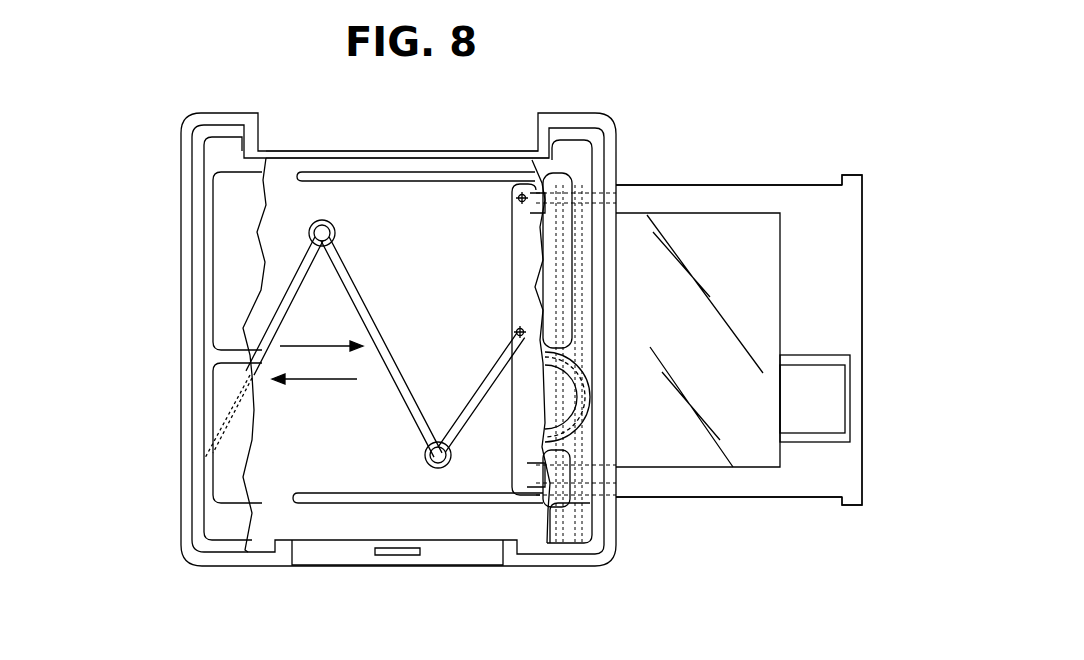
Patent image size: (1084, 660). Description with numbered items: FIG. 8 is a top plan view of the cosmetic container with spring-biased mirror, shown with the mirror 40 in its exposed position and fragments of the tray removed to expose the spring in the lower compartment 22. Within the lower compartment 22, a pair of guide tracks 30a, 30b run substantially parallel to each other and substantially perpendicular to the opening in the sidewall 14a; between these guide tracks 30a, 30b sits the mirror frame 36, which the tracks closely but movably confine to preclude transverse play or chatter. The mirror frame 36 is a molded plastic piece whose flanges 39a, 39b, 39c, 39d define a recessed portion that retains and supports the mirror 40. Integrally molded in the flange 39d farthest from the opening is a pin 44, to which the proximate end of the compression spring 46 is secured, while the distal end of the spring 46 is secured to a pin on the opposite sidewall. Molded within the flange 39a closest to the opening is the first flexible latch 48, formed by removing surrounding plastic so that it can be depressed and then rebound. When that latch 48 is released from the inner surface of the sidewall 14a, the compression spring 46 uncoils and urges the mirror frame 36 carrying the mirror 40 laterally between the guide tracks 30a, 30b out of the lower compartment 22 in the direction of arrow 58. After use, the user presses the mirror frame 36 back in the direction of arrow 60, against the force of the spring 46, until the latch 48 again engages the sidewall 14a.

The sidewall 14a is at (608, 535).
The lower compartment 22 is at (422, 478).
The guide track 30a is at (345, 525).
The guide track 30b is at (458, 180).
The compression spring 46 is at (358, 268).
The arrow 58 is at (321, 337).
The arrow 60 is at (314, 370).
The flange 39d is at (523, 273).
The pin 44 is at (521, 340).
The mirror frame 36 is at (712, 497).
The flange 39a is at (845, 284).
The flange 39b is at (729, 200).
The flange 39c is at (729, 483).
The mirror 40 is at (708, 347).
The first flexible latch 48 is at (820, 409).